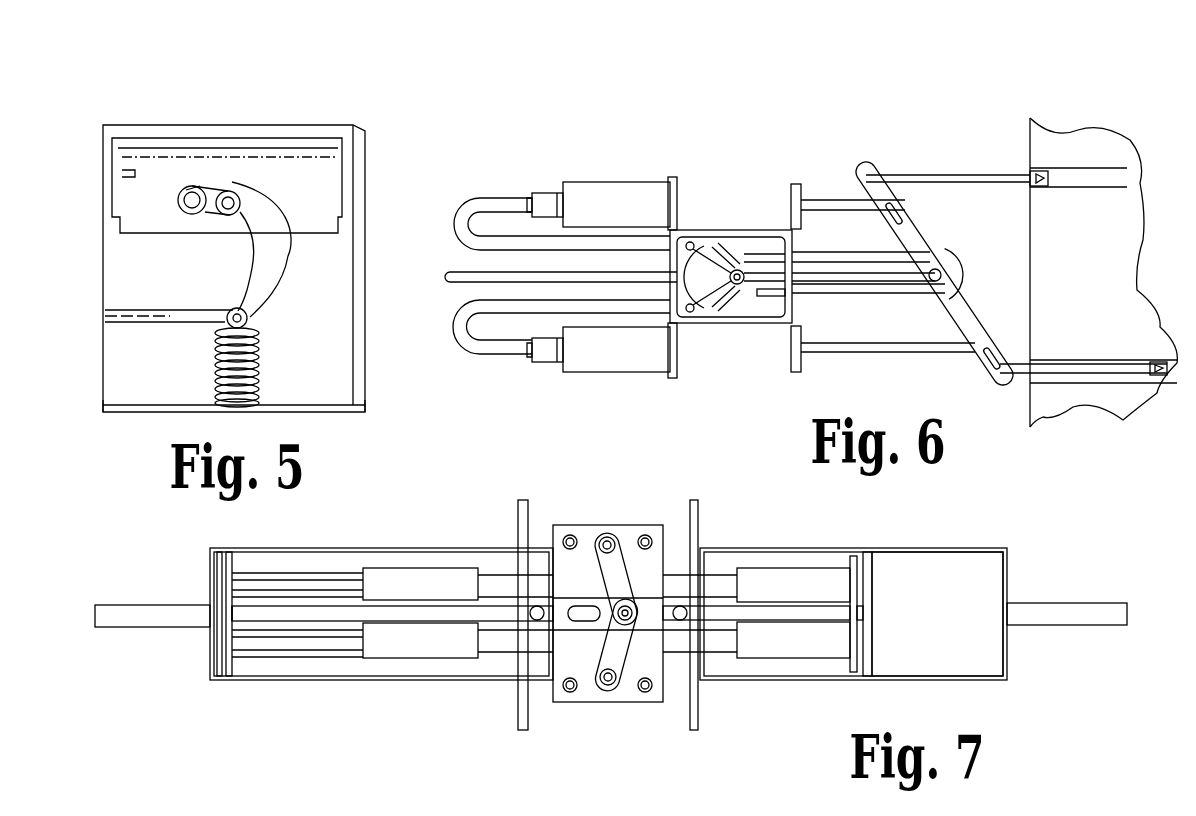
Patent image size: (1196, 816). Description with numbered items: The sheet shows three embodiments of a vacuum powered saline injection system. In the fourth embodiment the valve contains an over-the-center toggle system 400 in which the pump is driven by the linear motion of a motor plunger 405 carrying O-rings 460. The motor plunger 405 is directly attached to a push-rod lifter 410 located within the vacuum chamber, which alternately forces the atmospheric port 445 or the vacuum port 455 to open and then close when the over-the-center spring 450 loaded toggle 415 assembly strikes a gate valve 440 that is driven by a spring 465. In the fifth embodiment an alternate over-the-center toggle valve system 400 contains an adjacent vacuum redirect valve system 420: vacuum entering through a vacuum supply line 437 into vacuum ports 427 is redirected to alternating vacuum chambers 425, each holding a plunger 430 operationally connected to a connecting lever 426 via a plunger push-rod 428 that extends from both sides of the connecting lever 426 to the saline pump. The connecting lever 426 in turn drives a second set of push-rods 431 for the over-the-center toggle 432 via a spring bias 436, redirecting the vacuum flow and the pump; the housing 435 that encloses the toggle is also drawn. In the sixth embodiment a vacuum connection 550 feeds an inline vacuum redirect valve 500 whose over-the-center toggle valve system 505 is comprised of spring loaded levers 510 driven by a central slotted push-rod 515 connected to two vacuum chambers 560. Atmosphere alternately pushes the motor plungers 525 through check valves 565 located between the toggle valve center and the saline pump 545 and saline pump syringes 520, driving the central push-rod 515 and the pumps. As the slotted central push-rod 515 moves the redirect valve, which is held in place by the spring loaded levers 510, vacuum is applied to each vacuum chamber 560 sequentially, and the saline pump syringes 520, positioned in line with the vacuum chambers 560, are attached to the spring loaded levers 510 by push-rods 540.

In FIG. 5, the over-the-center toggle system 400 is at (390, 132).
In FIG. 5, the motor plunger 405 is at (320, 412).
In FIG. 5, the push-rod lifter 410 is at (178, 310).
In FIG. 5, the toggle 415 is at (246, 193).
In FIG. 5, the gate valve 440 is at (212, 168).
In FIG. 5, the atmospheric port 445 is at (197, 176).
In FIG. 5, the over-the-center spring 450 is at (212, 238).
In FIG. 5, the vacuum port 455 is at (190, 172).
In FIG. 5, the O-rings 460 is at (98, 406).
In FIG. 5, the spring 465 is at (262, 363).
In FIG. 6, the vacuum redirect valve system 420 is at (989, 97).
In FIG. 6, the vacuum chambers 425 is at (630, 182).
In FIG. 6, the connecting lever 426 is at (905, 232).
In FIG. 6, the vacuum ports 427 is at (699, 330).
In FIG. 6, the plunger push-rod 428 is at (962, 176).
In FIG. 6, the plunger 430 is at (796, 184).
In FIG. 6, the second set of push-rods 431 is at (873, 256).
In FIG. 6, the over-the-center toggle 432 is at (733, 321).
In FIG. 6, the valve housing 435 is at (712, 236).
In FIG. 6, the spring bias 436 is at (745, 271).
In FIG. 6, the vacuum supply line 437 is at (452, 281).
In FIG. 7, the inline vacuum redirect valve 500 is at (967, 518).
In FIG. 7, the over-the-center toggle valve system 505 is at (555, 713).
In FIG. 7, the spring loaded levers 510 is at (597, 525).
In FIG. 7, the central slotted push-rod 515 is at (297, 616).
In FIG. 7, the saline pump syringes 520 is at (405, 568).
In FIG. 7, the motor plungers 525 is at (225, 682).
In FIG. 7, the push-rods 540 is at (497, 660).
In FIG. 7, the saline pump 545 is at (503, 630).
In FIG. 7, the vacuum connection 550 is at (1082, 603).
In FIG. 7, the vacuum chambers 560 is at (947, 625).
In FIG. 7, the check valves 565 is at (530, 612).